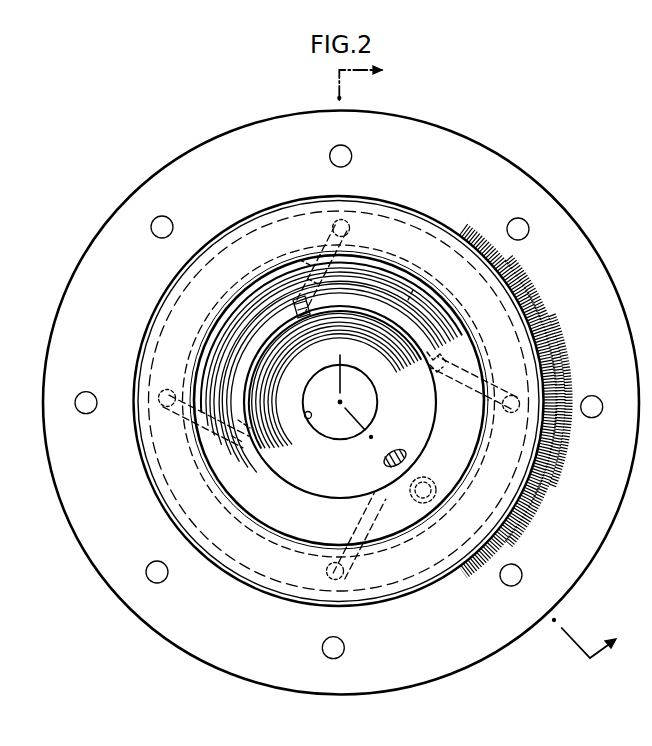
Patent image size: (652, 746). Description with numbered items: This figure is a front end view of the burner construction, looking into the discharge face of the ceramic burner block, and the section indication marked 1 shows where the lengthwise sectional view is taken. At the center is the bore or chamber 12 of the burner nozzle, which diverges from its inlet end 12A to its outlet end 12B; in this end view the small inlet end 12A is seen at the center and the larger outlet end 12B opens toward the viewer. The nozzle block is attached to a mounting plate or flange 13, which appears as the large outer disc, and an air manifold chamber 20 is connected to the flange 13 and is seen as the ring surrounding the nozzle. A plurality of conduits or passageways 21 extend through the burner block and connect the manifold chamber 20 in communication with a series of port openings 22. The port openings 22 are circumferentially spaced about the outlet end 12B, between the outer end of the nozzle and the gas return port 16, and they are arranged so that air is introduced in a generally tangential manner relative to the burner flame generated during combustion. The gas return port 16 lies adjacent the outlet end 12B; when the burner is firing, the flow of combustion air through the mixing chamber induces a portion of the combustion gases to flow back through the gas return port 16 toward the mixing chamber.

The mounting plate or flange 13 is at (475, 168).
The air manifold chamber 20 is at (373, 207).
The conduits or passageways 21 is at (327, 240).
The bore or chamber 12 is at (393, 340).
The inlet end 12A is at (306, 418).
The outlet end 12B is at (447, 343).
The port openings 22 is at (300, 335).
The gas return port 16 is at (384, 452).
The section line 1 is at (470, 369).